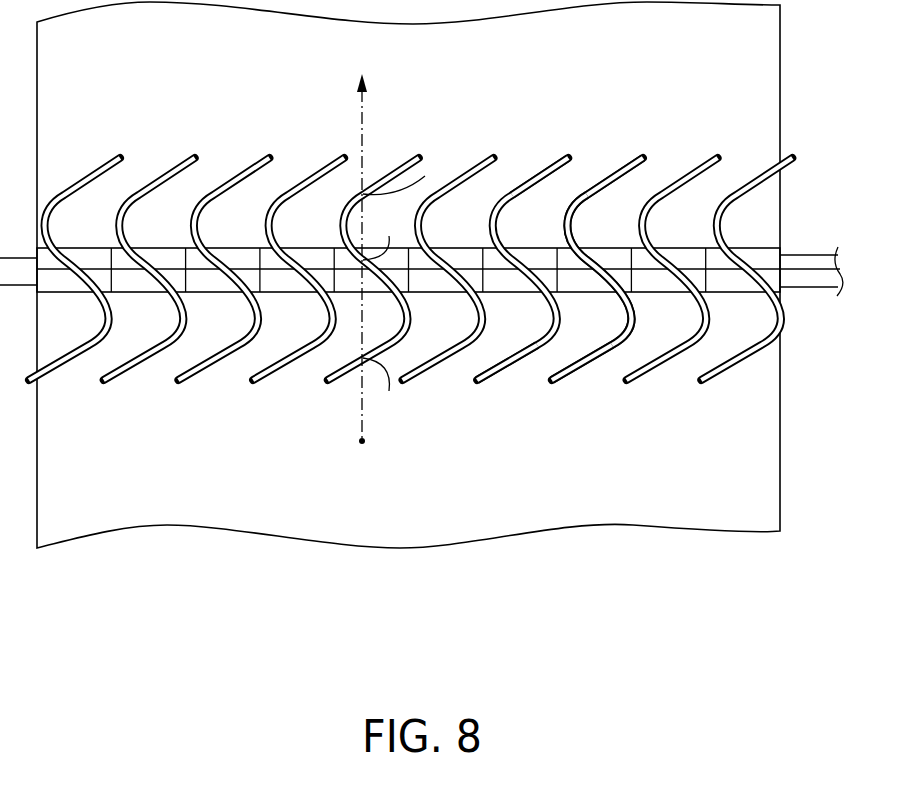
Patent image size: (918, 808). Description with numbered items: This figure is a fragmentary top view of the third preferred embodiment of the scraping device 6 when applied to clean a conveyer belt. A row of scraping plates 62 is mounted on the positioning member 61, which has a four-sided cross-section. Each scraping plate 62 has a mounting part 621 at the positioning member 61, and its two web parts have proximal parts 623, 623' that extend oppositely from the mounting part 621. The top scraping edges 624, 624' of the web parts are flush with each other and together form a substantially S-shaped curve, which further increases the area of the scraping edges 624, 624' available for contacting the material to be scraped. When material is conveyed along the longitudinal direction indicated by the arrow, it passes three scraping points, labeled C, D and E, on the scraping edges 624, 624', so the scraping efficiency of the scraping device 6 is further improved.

The scraping device 6 is at (429, 275).
The positioning member 61 is at (818, 254).
The scraping plate 62 is at (383, 178).
The mounting part 621 is at (610, 296).
The proximal part 623 is at (629, 141).
The proximal part 623' is at (554, 417).
The top scraping edge 624 is at (538, 149).
The top scraping edge 624' is at (489, 395).